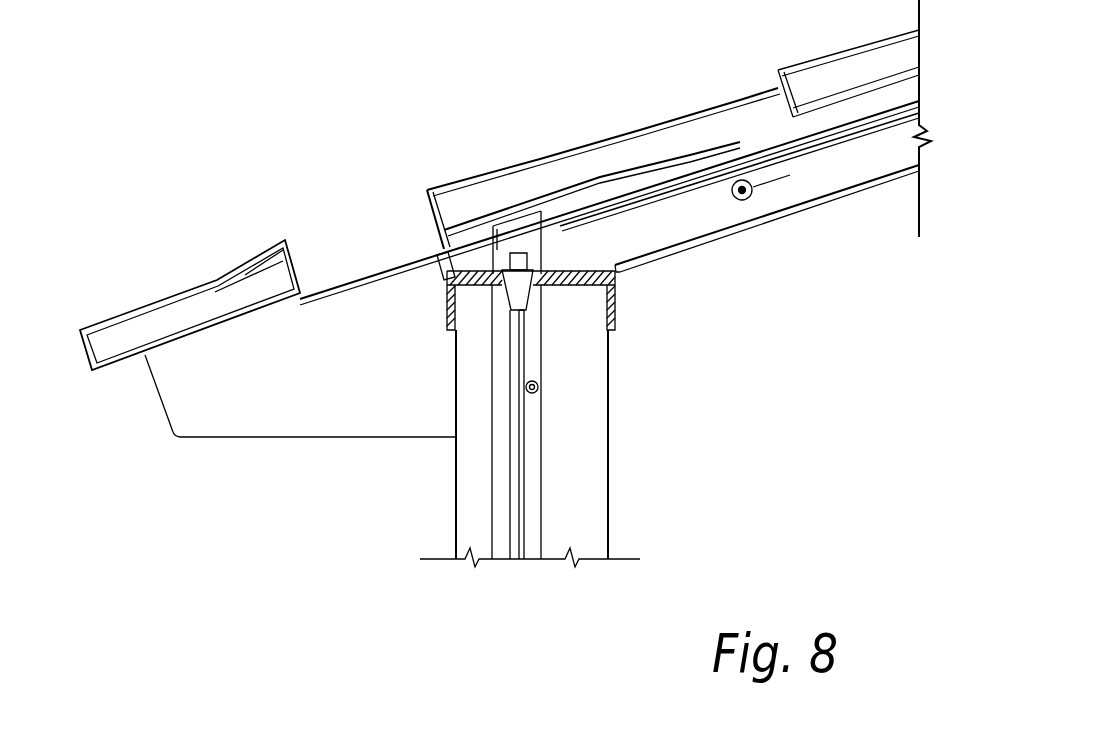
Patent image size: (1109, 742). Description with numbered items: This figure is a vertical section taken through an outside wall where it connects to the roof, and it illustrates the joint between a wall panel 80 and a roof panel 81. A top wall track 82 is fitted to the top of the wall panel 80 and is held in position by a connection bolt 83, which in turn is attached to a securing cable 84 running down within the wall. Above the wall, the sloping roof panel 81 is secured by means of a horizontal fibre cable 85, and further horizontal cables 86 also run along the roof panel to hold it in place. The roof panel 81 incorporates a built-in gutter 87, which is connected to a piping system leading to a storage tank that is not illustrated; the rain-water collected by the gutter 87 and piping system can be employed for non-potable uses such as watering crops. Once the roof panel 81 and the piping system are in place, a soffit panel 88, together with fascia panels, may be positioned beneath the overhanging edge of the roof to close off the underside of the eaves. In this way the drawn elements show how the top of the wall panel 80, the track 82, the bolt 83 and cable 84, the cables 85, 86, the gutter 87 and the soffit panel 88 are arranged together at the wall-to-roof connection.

The wall panel 80 is at (612, 441).
The roof panel 81 is at (556, 157).
The top wall track 82 is at (618, 296).
The connection bolt 83 is at (532, 298).
The securing cable 84 is at (523, 500).
The horizontal fibre cable 85 is at (875, 124).
The horizontal cables 86 is at (752, 200).
The built-in gutter 87 is at (350, 252).
The soffit panel 88 is at (245, 438).